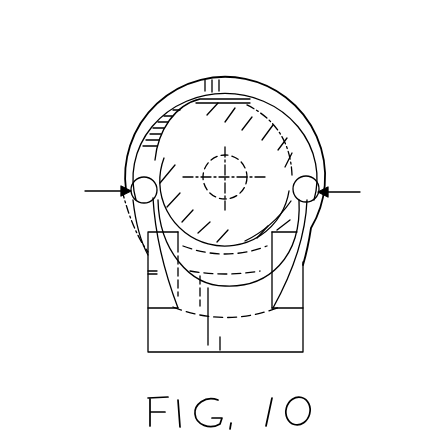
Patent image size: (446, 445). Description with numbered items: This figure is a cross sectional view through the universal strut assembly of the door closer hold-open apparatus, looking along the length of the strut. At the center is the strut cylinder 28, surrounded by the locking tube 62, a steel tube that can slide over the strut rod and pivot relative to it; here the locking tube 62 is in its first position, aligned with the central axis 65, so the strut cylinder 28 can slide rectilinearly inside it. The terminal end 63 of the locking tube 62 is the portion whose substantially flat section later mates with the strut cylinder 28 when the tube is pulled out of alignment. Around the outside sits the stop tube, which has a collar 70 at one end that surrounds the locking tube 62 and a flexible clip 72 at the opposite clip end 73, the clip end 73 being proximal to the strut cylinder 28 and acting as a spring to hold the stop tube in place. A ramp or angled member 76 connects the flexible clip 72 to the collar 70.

The locking tube 62 is at (181, 104).
The central axis 65 is at (222, 174).
The terminal end of the locking tube 63 is at (260, 108).
The collar 70 is at (303, 137).
The strut cylinder 28 is at (286, 164).
The ramp or angled member 76 is at (270, 248).
The flexible clip 72 is at (148, 244).
The clip end 73 is at (126, 329).